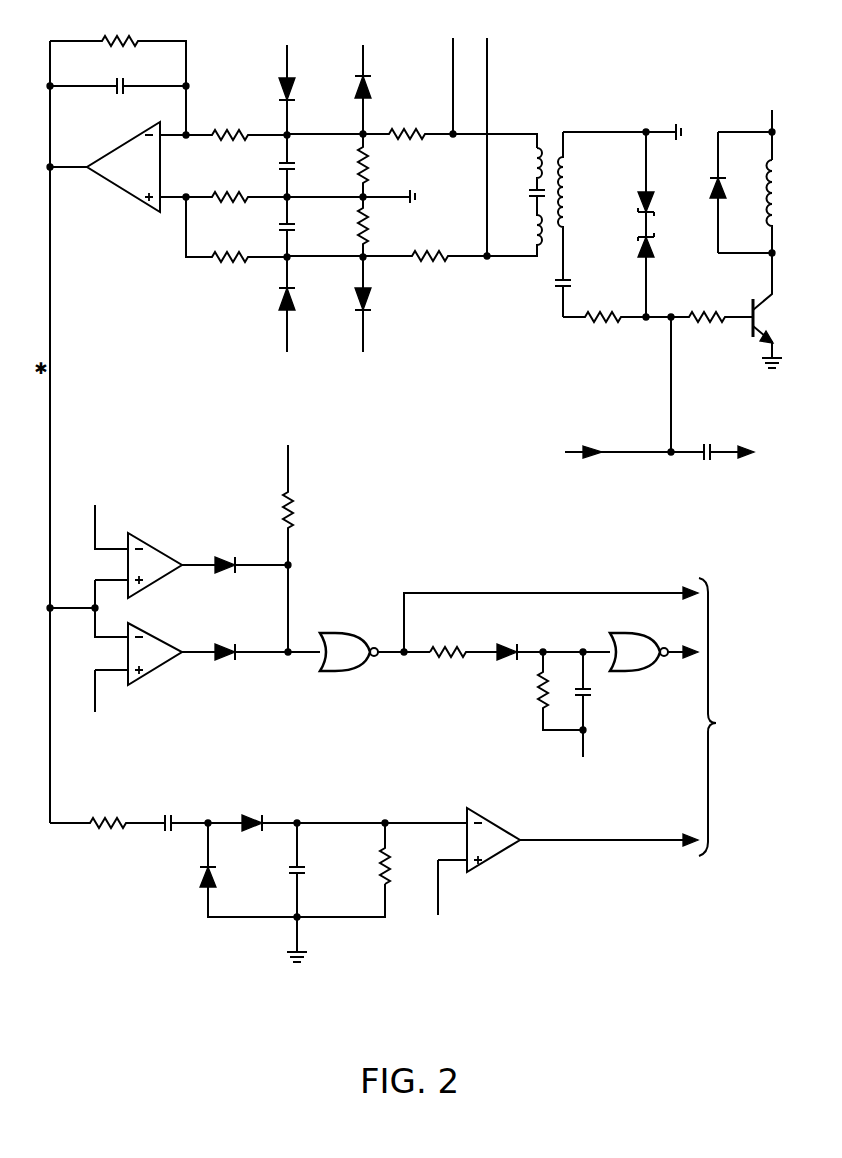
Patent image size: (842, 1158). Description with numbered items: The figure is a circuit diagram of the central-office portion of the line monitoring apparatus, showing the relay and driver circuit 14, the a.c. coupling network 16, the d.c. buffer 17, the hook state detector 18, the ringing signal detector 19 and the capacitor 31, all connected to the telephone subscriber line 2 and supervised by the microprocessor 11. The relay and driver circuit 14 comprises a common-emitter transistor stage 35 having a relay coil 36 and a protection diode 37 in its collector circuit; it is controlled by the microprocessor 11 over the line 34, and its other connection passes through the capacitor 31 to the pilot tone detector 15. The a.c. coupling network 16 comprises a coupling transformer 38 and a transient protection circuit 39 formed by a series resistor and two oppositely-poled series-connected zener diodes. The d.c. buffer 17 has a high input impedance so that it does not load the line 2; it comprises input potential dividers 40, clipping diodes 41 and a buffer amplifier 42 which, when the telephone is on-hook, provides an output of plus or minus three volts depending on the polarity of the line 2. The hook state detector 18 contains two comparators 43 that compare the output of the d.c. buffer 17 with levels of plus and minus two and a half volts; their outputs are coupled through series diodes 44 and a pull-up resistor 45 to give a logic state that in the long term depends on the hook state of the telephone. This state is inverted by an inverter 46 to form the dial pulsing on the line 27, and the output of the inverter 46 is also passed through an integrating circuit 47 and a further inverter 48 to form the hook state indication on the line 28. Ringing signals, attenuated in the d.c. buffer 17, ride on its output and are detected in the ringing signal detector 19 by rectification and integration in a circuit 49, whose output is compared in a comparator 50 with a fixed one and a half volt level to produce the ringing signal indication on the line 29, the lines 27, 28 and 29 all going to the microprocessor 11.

The telephone subscriber line 2 is at (470, 128).
The microprocessor 11 is at (751, 717).
The relay and driver circuit 14 is at (717, 173).
The pilot tone detector 15 is at (747, 472).
The a.c. coupling network 16 is at (645, 270).
The d.c. buffer 17 is at (293, 184).
The hook state detector 18 is at (374, 605).
The ringing signal detector 19 is at (374, 873).
The dial pulsing line 27 is at (567, 592).
The hook state indication line 28 is at (671, 646).
The ringing signal indication line 29 is at (648, 838).
The capacitor 31 is at (707, 440).
The control line 34 is at (619, 448).
The common-emitter transistor stage 35 is at (780, 336).
The relay coil 36 is at (759, 198).
The protection diode 37 is at (711, 190).
The coupling transformer 38 is at (548, 260).
The transient protection circuit 39 is at (652, 270).
The input potential dividers 40 is at (422, 189).
The clipping diodes 41 is at (307, 88).
The buffer amplifier 42 is at (107, 189).
The comparators 43 is at (162, 543).
The series diodes 44 is at (225, 553).
The pull-up resistor 45 is at (293, 515).
The inverter 46 is at (346, 674).
The integrating circuit 47 is at (520, 668).
The inverter 48 is at (641, 674).
The rectification and integration circuit 49 is at (183, 838).
The comparator 50 is at (508, 857).